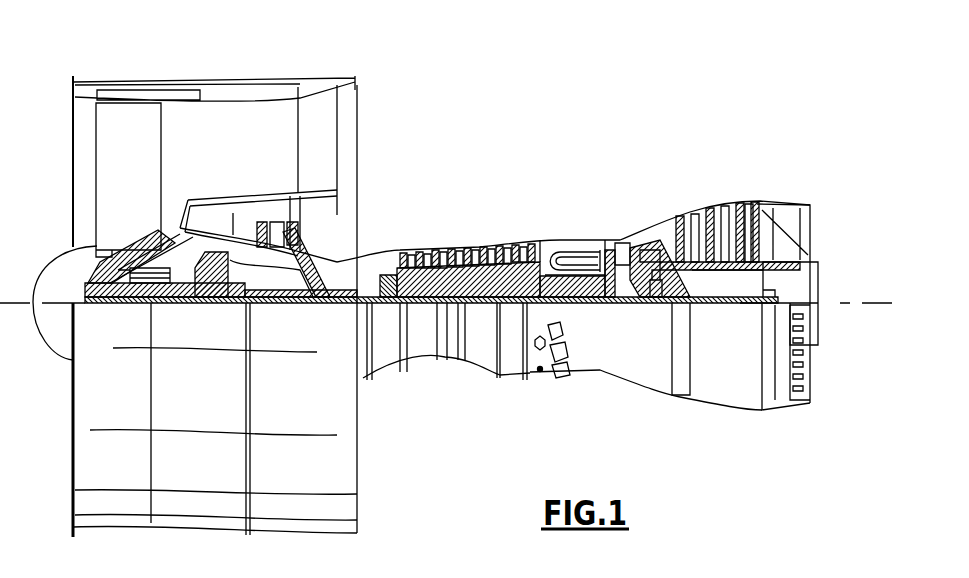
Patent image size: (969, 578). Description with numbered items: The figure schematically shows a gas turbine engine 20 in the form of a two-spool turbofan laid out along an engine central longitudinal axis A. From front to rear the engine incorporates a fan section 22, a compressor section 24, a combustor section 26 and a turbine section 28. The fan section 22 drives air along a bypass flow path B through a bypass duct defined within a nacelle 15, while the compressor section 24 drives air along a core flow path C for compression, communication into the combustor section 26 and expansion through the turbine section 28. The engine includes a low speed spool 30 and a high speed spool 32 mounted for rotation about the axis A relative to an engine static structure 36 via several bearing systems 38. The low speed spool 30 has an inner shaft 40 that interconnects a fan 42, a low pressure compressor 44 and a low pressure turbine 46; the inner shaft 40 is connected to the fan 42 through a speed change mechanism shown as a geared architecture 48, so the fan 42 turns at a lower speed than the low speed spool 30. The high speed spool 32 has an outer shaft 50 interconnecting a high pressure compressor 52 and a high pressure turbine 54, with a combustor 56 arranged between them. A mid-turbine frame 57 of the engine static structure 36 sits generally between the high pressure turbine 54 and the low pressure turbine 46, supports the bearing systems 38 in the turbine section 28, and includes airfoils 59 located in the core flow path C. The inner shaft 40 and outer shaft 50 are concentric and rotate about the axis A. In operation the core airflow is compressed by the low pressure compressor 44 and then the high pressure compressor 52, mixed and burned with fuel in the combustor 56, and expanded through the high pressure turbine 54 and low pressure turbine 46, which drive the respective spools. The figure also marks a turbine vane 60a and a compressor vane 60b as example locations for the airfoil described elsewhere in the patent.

The nacelle 15 is at (215, 84).
The gas turbine engine 20 is at (590, 108).
The fan section 22 is at (158, 72).
The compressor section 24 is at (395, 218).
The combustor section 26 is at (570, 212).
The turbine section 28 is at (686, 185).
The low speed spool 30 is at (478, 318).
The high speed spool 32 is at (510, 252).
The engine static structure 36 is at (512, 383).
The bearing systems 38 is at (325, 297).
The inner shaft 40 is at (367, 305).
The fan 42 is at (147, 185).
The low pressure compressor 44 is at (298, 228).
The low pressure turbine 46 is at (722, 202).
The geared architecture 48 is at (222, 297).
The outer shaft 50 is at (566, 303).
The high pressure compressor 52 is at (458, 250).
The high pressure turbine 54 is at (637, 240).
The combustor 56 is at (570, 254).
The mid-turbine frame 57 is at (656, 224).
The airfoils 59 is at (682, 276).
The turbine vane 60a is at (678, 232).
The compressor vane 60b is at (503, 245).
The engine central longitudinal axis A is at (892, 303).
The bypass flow path B is at (187, 141).
The core flow path C is at (208, 217).